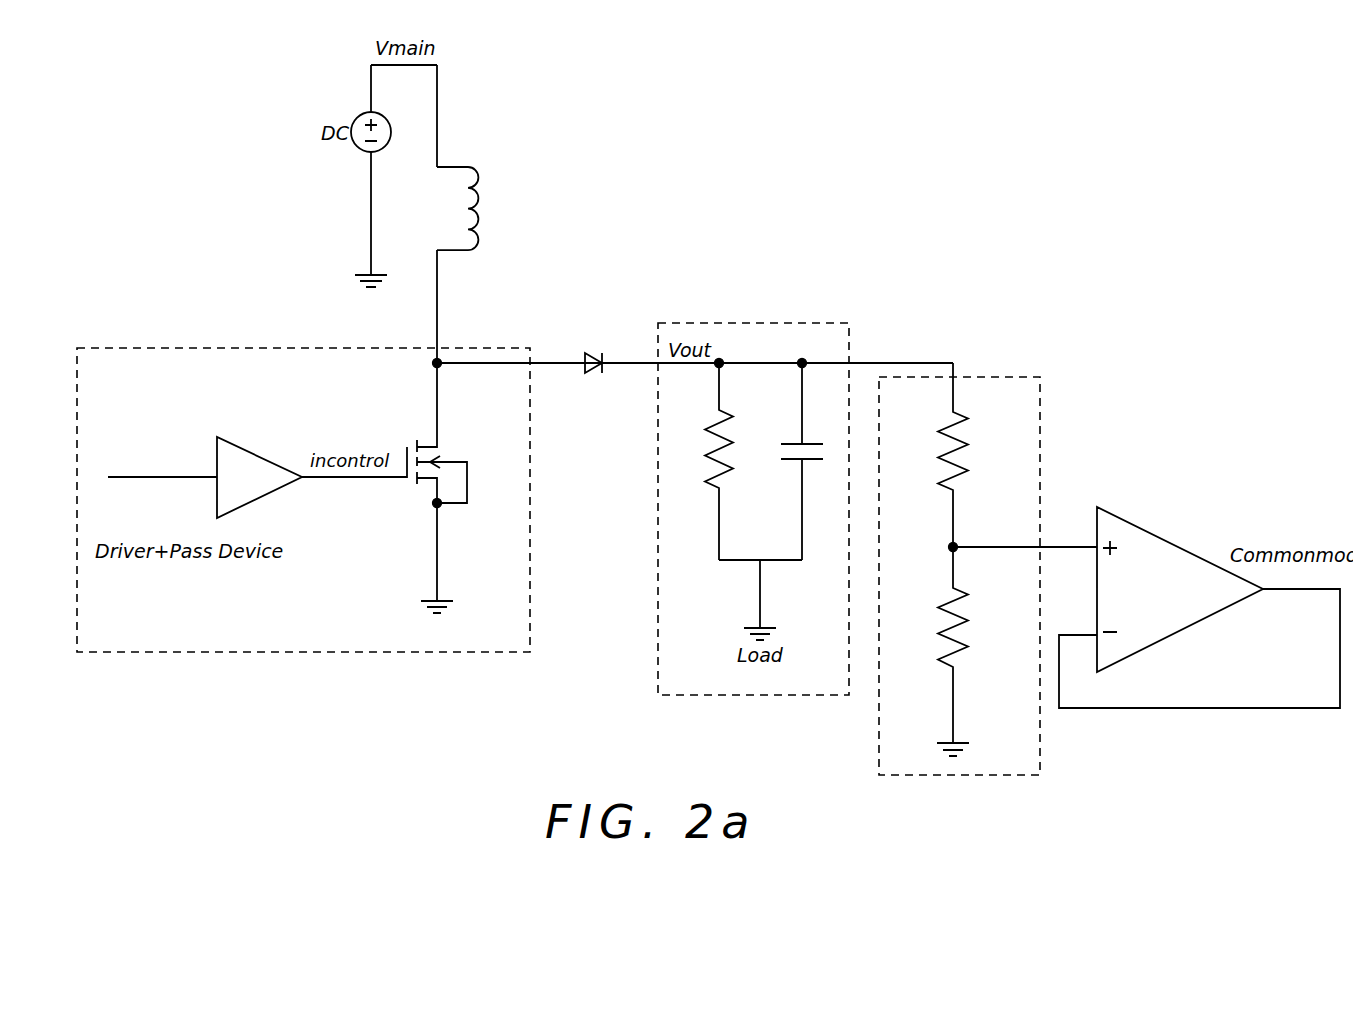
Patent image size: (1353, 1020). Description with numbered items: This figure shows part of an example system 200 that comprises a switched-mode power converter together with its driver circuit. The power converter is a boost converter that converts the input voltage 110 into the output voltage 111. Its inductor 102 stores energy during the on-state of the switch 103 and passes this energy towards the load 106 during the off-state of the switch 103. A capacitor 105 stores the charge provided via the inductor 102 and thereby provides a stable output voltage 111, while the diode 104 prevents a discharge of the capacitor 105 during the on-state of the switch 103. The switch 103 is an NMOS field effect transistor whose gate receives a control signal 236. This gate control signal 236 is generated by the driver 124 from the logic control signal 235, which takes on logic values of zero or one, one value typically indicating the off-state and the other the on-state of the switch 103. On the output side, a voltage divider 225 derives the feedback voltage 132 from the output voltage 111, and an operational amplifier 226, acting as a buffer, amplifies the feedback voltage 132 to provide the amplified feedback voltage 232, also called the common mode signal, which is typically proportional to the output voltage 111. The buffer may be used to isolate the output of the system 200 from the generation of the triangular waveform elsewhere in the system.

The system 200 is at (757, 165).
The input voltage 110 is at (438, 82).
The inductor 102 is at (480, 188).
The switch 103 is at (440, 450).
The diode 104 is at (589, 347).
The capacitor 105 is at (780, 458).
The load 106 is at (703, 452).
The output voltage 111 is at (887, 364).
The driver 124 is at (227, 438).
The feedback voltage 132 is at (923, 402).
The voltage divider 225 is at (1007, 377).
The operational amplifier 226 is at (1190, 552).
The amplified feedback voltage 232 is at (1275, 592).
The logic control signal 235 is at (150, 477).
The control signal 236 is at (365, 480).